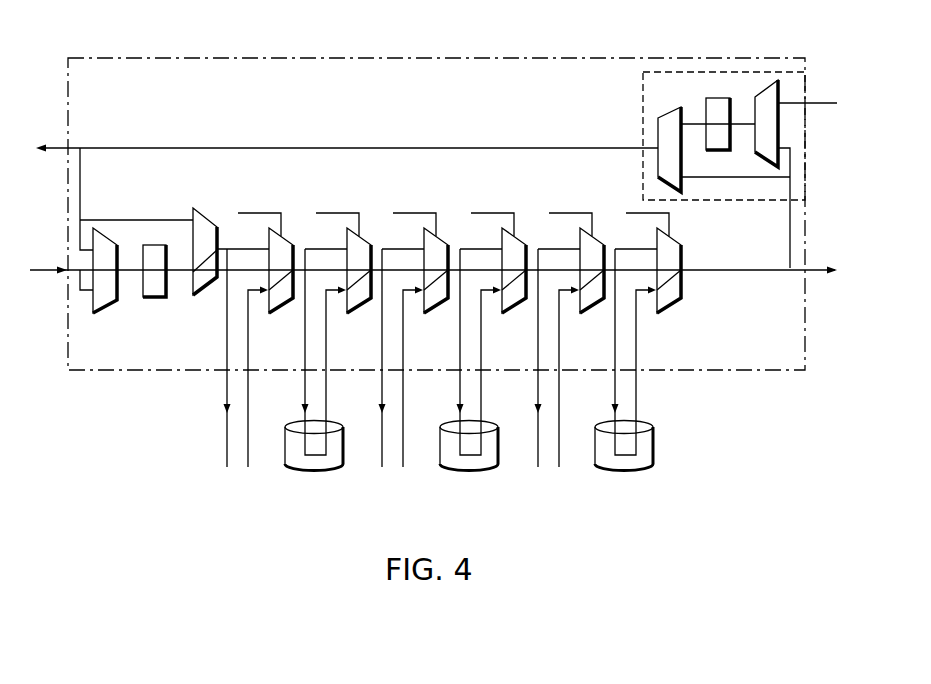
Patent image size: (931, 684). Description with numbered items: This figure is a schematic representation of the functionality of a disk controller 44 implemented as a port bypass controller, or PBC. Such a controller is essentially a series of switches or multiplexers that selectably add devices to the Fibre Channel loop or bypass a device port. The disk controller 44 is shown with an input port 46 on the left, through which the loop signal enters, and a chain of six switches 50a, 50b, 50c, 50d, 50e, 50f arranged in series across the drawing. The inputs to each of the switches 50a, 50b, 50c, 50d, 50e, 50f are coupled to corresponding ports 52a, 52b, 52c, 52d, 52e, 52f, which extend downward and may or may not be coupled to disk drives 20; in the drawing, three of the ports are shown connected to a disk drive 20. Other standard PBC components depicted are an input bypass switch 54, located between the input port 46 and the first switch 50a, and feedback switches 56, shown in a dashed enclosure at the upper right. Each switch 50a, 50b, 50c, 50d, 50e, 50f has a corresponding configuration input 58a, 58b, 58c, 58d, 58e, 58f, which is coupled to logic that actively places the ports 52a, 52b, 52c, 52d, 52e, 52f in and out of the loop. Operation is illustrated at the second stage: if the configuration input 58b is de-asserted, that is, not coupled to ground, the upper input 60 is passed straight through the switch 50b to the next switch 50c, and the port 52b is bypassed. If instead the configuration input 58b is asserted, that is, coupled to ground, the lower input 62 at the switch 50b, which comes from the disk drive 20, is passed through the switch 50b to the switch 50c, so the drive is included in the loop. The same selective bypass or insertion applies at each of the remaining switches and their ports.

The disk controller 44 is at (196, 58).
The input port 46 is at (63, 268).
The input bypass switch 54 is at (194, 215).
The feedback switches 56 is at (700, 70).
The upper input 60 is at (433, 265).
The lower input 62 is at (340, 358).
The disk drive 20 is at (330, 469).
The switch 50a is at (292, 243).
The switch 50b is at (370, 243).
The switch 50c is at (448, 243).
The switch 50d is at (526, 243).
The switch 50e is at (603, 243).
The switch 50f is at (682, 244).
The configuration input 58a is at (258, 213).
The configuration input 58b is at (346, 213).
The configuration input 58c is at (410, 213).
The configuration input 58d is at (500, 213).
The configuration input 58e is at (565, 213).
The configuration input 58f is at (672, 214).
The port 52a is at (226, 396).
The port 52b is at (304, 396).
The port 52c is at (381, 396).
The port 52d is at (459, 396).
The port 52e is at (536, 396).
The port 52f is at (614, 396).